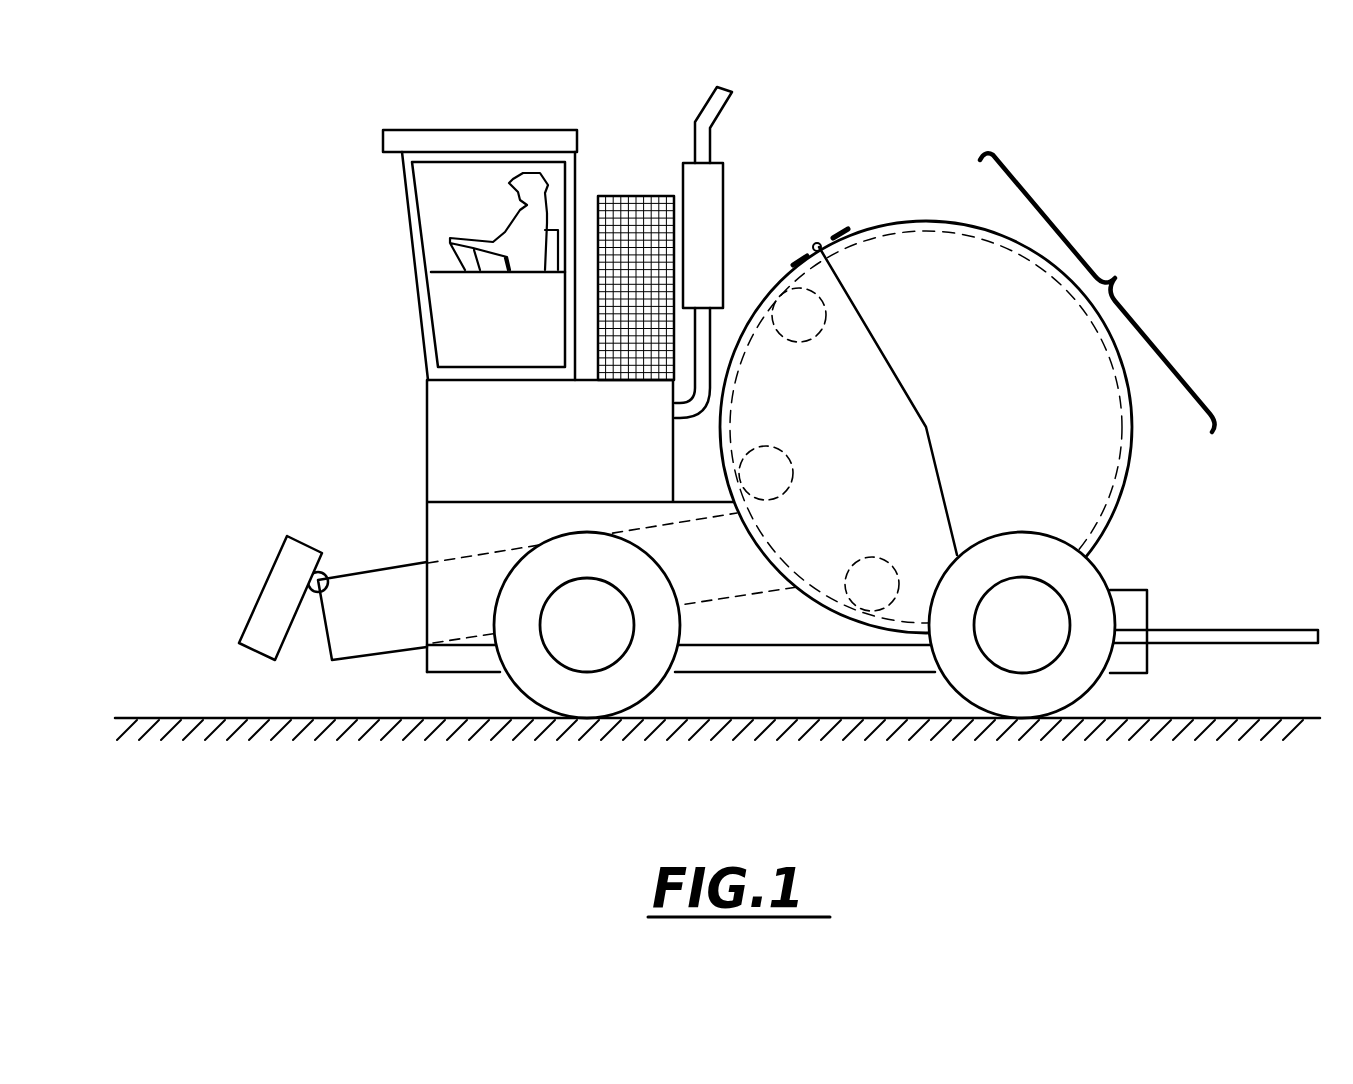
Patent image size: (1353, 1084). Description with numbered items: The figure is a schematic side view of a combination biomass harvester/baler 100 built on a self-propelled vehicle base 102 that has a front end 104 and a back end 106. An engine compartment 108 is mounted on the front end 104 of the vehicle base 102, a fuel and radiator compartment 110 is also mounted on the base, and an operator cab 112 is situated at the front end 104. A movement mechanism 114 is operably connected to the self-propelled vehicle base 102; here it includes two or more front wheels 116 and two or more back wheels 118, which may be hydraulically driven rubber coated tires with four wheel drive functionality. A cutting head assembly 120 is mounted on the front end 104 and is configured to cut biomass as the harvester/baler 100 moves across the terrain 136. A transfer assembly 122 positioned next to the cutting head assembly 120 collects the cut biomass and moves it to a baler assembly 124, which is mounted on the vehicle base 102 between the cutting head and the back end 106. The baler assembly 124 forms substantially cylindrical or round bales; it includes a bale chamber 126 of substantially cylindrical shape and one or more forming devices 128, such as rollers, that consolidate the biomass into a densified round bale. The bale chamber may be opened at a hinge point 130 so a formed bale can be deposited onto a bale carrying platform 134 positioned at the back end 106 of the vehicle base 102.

The combination biomass harvester/baler 100 is at (238, 223).
The self-propelled vehicle base 102 is at (812, 654).
The front end 104 is at (248, 478).
The back end 106 is at (1242, 430).
The engine compartment 108 is at (443, 434).
The fuel and radiator compartment 110 is at (657, 195).
The operator cab 112 is at (462, 129).
The movement mechanism 114 is at (1115, 753).
The front wheels 116 is at (530, 667).
The back wheels 118 is at (1077, 667).
The cutting head assembly 120 is at (272, 605).
The transfer assembly 122 is at (385, 584).
The baler assembly 124 is at (1116, 279).
The bale chamber 126 is at (1081, 484).
The forming devices 128 is at (803, 342).
The hinge point 130 is at (814, 243).
The bale carrying platform 134 is at (1222, 629).
The terrain 136 is at (188, 717).